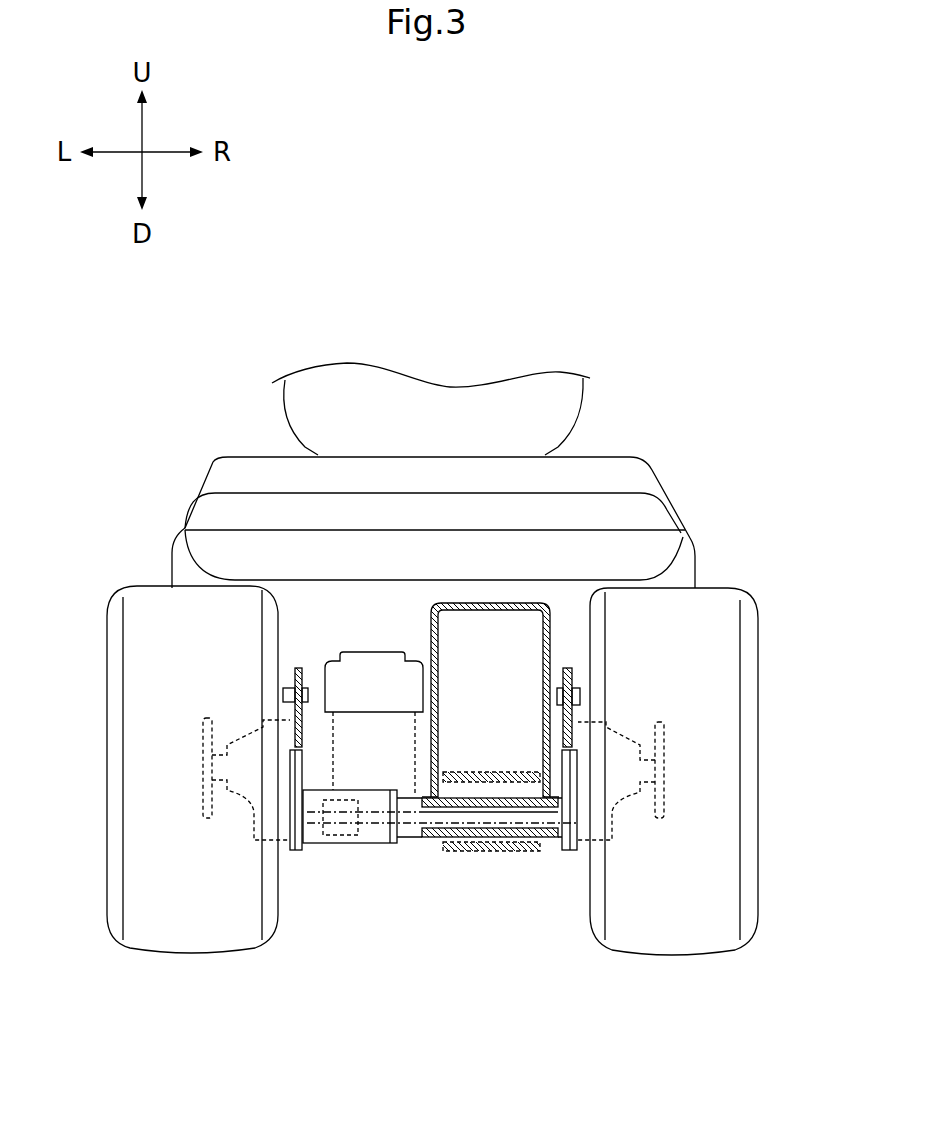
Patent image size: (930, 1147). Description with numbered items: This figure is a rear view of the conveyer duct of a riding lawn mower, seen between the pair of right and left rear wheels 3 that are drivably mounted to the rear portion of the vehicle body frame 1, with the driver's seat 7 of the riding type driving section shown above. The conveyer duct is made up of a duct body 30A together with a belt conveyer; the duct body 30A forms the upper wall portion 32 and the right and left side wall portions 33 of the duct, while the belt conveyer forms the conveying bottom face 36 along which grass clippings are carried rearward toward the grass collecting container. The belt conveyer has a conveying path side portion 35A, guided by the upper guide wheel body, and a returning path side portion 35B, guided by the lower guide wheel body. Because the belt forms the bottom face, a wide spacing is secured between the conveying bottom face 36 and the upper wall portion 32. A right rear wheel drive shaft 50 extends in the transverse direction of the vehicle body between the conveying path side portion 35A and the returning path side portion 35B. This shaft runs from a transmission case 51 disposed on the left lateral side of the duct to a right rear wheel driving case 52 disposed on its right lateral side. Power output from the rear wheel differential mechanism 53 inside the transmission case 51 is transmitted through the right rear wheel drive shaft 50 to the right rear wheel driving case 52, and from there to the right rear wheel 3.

The vehicle body frame 1 is at (295, 680).
The rear wheels 3 is at (115, 773).
The driver's seat 7 is at (578, 400).
The duct body 30A is at (510, 664).
The upper wall portion 32 is at (488, 602).
The side wall portions 33 is at (430, 644).
The conveying path side portion 35A is at (513, 772).
The returning path side portion 35B is at (497, 852).
The conveying bottom face 36 is at (500, 770).
The right rear wheel drive shaft 50 is at (440, 822).
The transmission case 51 is at (355, 662).
The right rear wheel driving case 52 is at (622, 788).
The rear wheel differential mechanism 53 is at (342, 832).